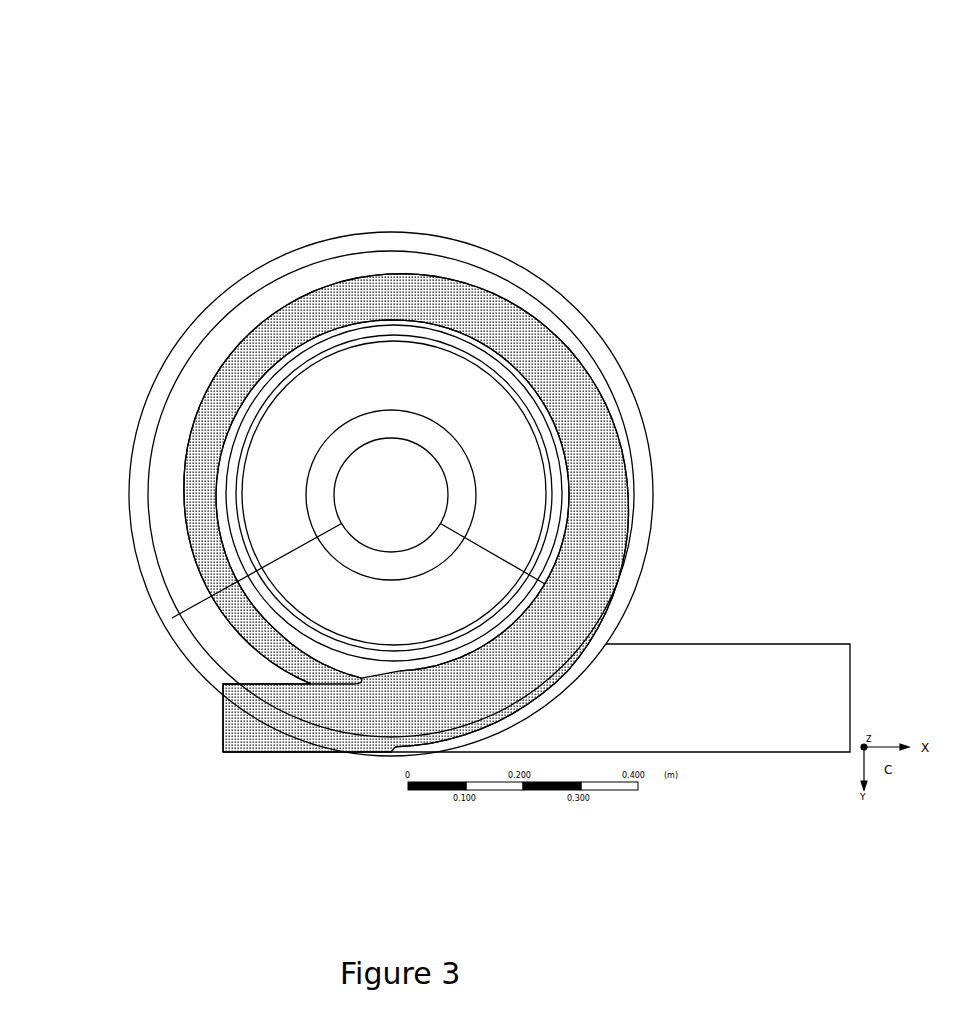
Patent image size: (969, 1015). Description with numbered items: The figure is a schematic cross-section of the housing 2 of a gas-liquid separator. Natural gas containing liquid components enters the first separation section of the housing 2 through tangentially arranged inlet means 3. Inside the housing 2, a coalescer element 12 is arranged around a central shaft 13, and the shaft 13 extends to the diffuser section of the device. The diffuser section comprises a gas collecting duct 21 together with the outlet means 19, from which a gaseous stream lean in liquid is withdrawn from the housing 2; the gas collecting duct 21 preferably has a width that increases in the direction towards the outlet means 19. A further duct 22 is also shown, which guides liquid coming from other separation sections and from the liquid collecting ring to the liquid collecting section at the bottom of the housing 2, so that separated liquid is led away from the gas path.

The housing 2 is at (192, 333).
The inlet means 3 is at (742, 708).
The coalescer element 12 is at (317, 410).
The shaft 13 is at (403, 487).
The outlet means 19 is at (247, 720).
The gas collecting duct 21 is at (587, 552).
The duct 22 is at (170, 542).